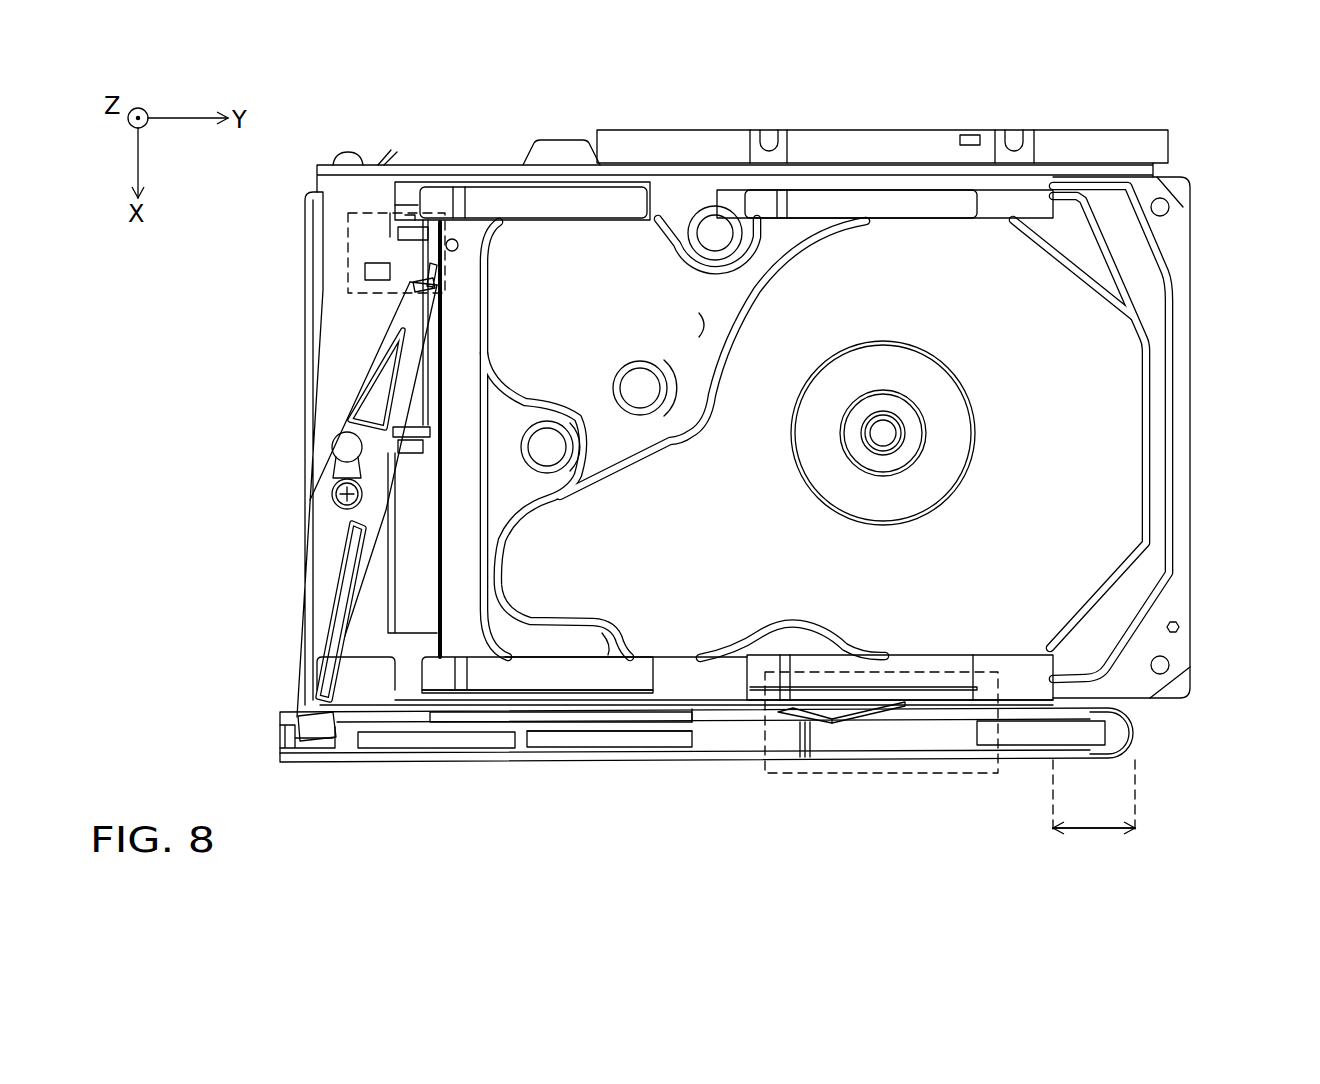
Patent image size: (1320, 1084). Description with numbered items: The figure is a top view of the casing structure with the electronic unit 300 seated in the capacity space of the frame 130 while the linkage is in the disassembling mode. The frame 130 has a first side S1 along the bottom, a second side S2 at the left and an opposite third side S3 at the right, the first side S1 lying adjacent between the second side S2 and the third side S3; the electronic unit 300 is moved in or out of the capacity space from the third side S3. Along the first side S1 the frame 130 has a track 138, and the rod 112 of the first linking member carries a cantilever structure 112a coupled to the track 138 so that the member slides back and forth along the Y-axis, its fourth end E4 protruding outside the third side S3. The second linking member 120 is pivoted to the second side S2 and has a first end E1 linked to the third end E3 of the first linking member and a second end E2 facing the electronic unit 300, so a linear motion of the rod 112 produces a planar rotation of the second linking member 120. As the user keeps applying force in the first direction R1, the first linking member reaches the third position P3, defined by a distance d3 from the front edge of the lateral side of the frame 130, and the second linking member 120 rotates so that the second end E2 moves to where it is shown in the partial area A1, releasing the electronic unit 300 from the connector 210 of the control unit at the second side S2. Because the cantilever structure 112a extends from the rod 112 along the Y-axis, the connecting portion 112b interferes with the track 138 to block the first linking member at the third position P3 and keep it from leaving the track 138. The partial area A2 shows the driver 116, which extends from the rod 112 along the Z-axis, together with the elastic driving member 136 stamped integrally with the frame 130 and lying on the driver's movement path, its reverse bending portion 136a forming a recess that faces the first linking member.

The frame 130 is at (860, 148).
The electronic unit 300 is at (1078, 370).
The connector 210 is at (410, 397).
The second linking member 120 is at (325, 497).
The rod 112 is at (512, 745).
The cantilever structure 112a is at (430, 716).
The connecting portion 112b is at (698, 708).
The track 138 is at (593, 712).
The driver 116 is at (806, 760).
The elastic driving member 136 is at (878, 710).
The reverse bending portion 136a is at (831, 727).
The first end E1 is at (297, 731).
The second end E2 is at (412, 275).
The third end E3 is at (313, 766).
The fourth end E4 is at (1068, 762).
The partial area A1 is at (348, 256).
The partial area A2 is at (937, 773).
The first side S1 is at (870, 830).
The second side S2 is at (250, 349).
The third side S3 is at (1232, 447).
The third position P3 is at (1138, 732).
The first direction R1 is at (973, 857).
The distance d3 is at (1094, 814).